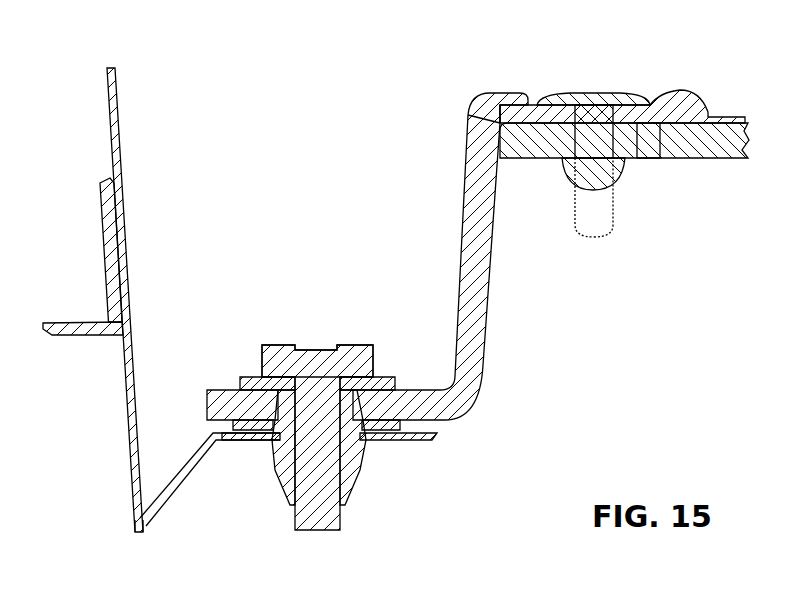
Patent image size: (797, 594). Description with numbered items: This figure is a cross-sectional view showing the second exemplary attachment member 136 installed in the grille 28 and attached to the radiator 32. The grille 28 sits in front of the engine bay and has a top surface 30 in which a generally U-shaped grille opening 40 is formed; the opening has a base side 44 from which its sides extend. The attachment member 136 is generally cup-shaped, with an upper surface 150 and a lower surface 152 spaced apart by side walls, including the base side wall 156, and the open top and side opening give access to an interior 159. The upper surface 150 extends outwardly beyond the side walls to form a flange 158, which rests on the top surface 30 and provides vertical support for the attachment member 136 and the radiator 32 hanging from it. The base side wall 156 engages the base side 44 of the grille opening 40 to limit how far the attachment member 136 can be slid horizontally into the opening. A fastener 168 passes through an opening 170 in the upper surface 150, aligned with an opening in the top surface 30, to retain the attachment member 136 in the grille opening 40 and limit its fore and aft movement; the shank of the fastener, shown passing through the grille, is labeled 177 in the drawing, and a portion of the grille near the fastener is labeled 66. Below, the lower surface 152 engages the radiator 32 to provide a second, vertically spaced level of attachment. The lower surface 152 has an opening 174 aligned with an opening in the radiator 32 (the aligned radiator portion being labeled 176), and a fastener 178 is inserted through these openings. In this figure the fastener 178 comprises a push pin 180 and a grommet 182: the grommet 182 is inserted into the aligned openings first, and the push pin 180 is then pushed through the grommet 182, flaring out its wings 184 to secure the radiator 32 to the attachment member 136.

The grille 28 is at (706, 158).
The top surface 30 is at (631, 83).
The radiator 32 is at (118, 136).
The grille opening 40 is at (492, 135).
The base side 44 is at (499, 147).
The panel portion 66 is at (655, 160).
The attachment member 136 is at (490, 345).
The upper surface 150 is at (497, 93).
The lower surface 152 is at (455, 232).
The base side wall 156 is at (455, 232).
The flange 158 is at (687, 93).
The interior 159 is at (268, 197).
The fastener 168 is at (619, 137).
The opening 170 is at (619, 137).
The rivet shank 177 is at (640, 54).
The opening 174 is at (350, 398).
The bolt shank 176 is at (313, 348).
The fastener 178 is at (350, 398).
The push pin 180 is at (278, 348).
The grommet 182 is at (252, 382).
The wings 184 is at (278, 460).